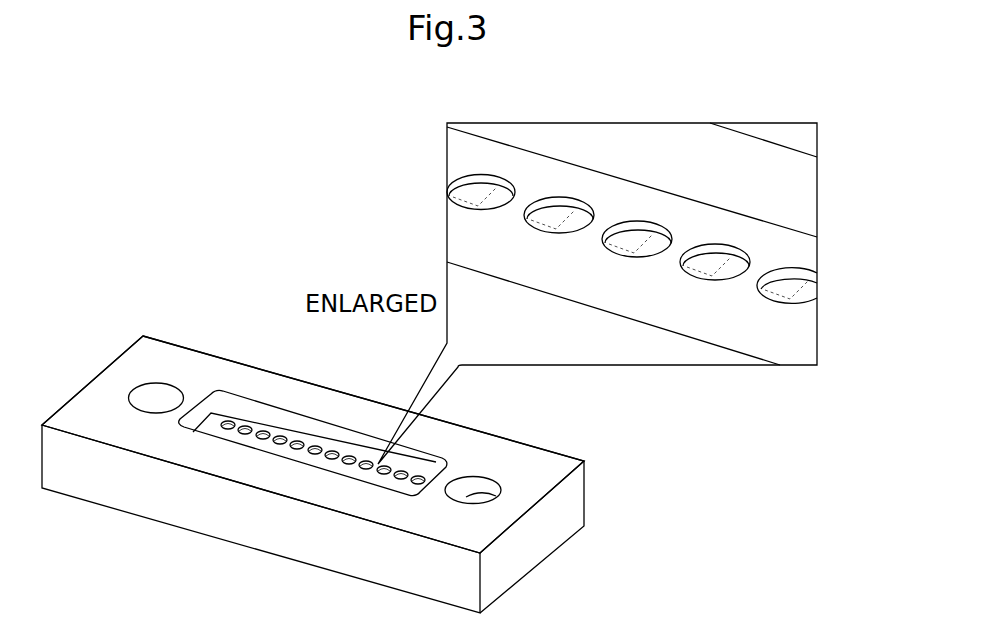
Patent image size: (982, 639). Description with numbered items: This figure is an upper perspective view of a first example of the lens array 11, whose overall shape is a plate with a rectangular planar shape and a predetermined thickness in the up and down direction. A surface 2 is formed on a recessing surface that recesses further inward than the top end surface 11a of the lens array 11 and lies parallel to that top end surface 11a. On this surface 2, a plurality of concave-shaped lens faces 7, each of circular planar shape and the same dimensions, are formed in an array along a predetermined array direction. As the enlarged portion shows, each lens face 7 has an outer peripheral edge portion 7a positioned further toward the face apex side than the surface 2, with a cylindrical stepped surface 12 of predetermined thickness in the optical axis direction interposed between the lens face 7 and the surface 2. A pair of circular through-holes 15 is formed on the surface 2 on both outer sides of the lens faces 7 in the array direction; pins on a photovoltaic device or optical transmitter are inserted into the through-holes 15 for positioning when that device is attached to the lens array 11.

The lens array 11 is at (122, 260).
The top end surface 11a is at (108, 393).
The surface 2 is at (203, 428).
The lens face 7 is at (265, 436).
The through-hole 15 is at (495, 497).
The outer peripheral edge portion 7a is at (467, 183).
The stepped surface 12 is at (467, 183).